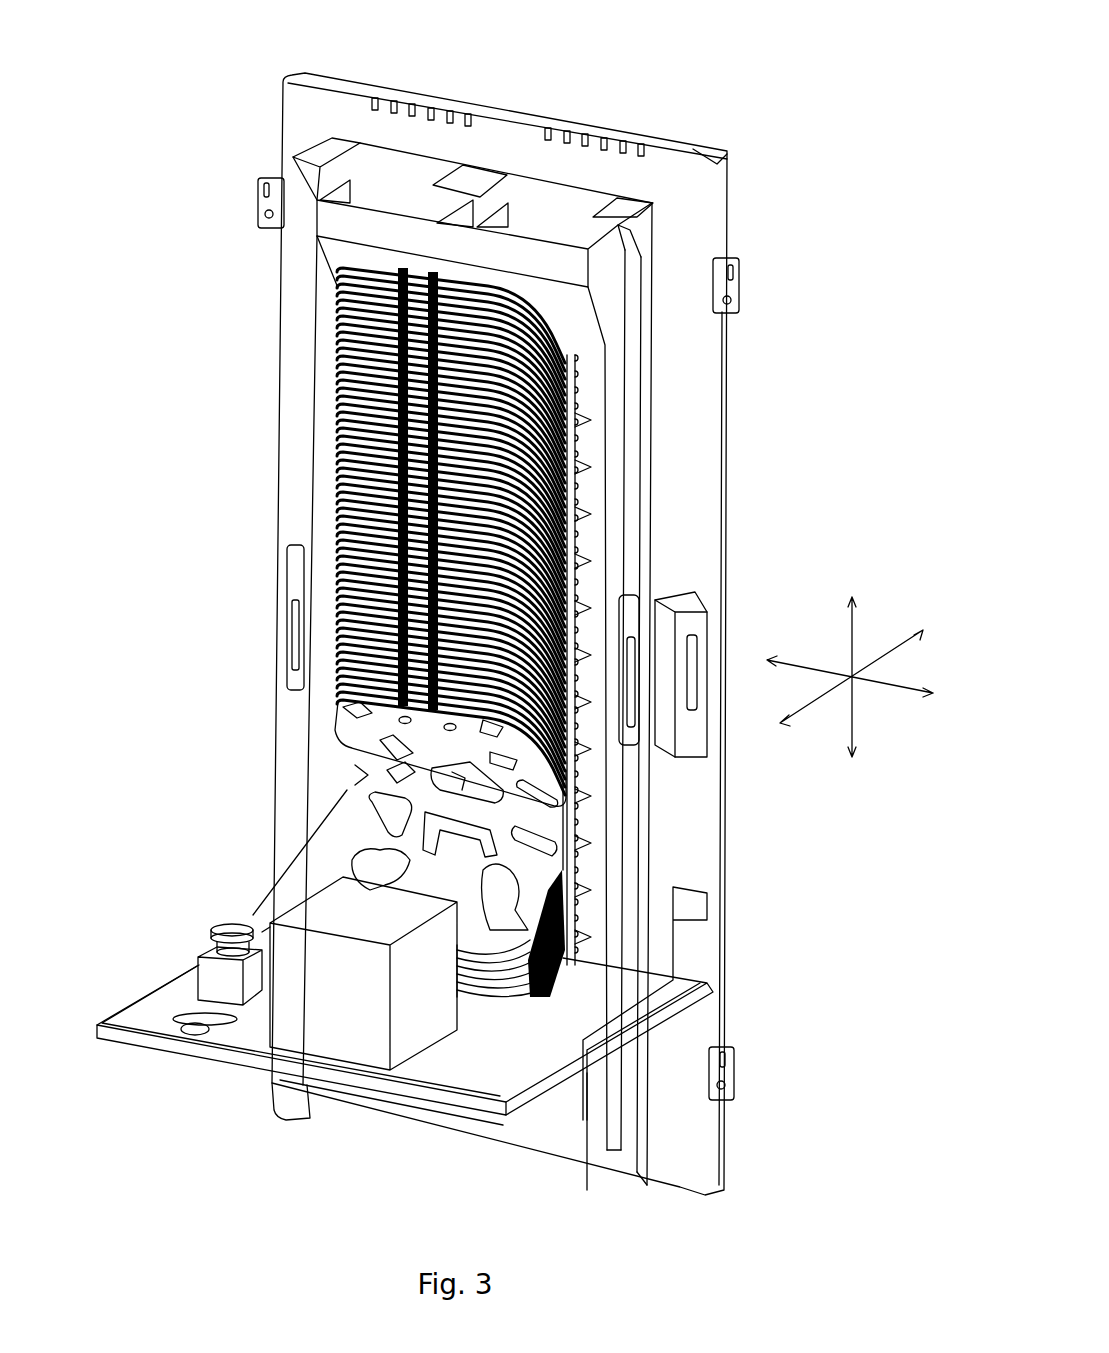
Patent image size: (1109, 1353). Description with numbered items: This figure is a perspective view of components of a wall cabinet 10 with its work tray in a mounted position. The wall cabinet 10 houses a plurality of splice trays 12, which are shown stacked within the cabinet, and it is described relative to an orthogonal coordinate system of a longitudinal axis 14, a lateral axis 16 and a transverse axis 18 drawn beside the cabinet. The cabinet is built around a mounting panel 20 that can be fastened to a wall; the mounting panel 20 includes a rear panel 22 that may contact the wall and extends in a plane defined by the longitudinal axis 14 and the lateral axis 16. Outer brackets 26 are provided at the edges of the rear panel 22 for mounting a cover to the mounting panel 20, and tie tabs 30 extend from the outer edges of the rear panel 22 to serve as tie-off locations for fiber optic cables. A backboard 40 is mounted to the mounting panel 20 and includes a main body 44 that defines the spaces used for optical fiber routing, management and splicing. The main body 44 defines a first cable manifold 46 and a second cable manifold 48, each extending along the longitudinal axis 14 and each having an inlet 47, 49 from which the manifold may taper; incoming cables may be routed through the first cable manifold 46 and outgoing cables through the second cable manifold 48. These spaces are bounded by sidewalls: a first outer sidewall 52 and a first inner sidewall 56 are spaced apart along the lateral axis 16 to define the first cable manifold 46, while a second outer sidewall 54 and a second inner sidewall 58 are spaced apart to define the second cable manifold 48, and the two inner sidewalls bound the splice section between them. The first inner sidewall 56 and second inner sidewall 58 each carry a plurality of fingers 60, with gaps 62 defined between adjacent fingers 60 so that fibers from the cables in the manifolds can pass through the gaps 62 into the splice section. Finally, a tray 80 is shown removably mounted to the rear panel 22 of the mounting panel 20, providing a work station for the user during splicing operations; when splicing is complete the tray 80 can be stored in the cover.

The wall cabinet 10 is at (795, 92).
The splice trays 12 is at (355, 390).
The longitudinal axis 14 is at (853, 637).
The lateral axis 16 is at (887, 687).
The transverse axis 18 is at (890, 652).
The mounting panel 20 is at (487, 95).
The rear panel 22 is at (512, 148).
The outer brackets 26 is at (737, 280).
The tie tab 30 is at (595, 218).
The backboard 40 is at (645, 466).
The main body 44 is at (597, 340).
The first cable manifold 46 is at (355, 795).
The inlet 47 is at (388, 193).
The second cable manifold 48 is at (586, 1073).
The inlet 49 is at (562, 213).
The first outer sidewall 52 is at (307, 706).
The second outer sidewall 54 is at (613, 848).
The first inner sidewall 56 is at (358, 803).
The second inner sidewall 58 is at (581, 747).
The fingers 60 is at (583, 500).
The gaps 62 is at (583, 513).
The tray 80 is at (127, 1050).